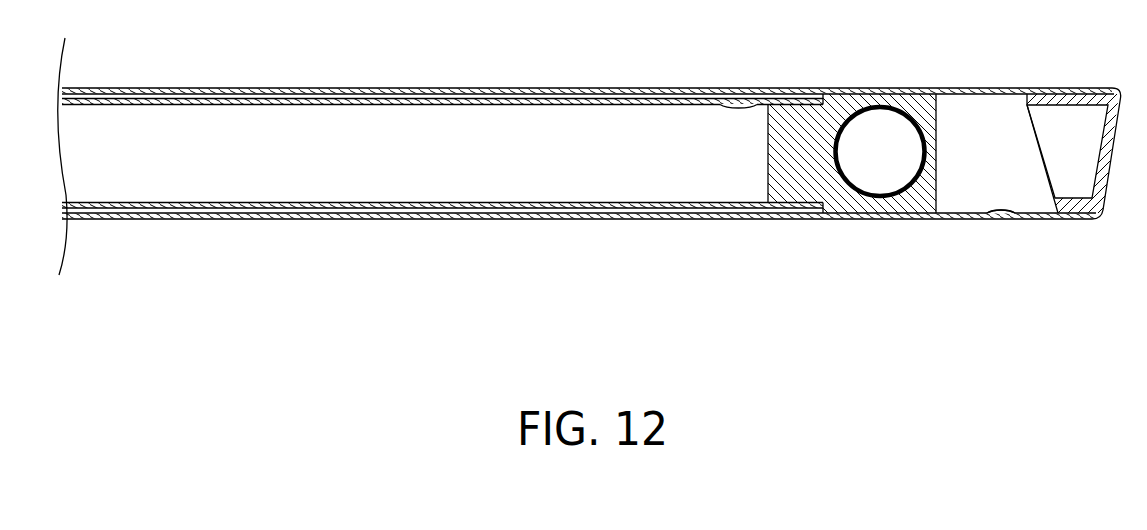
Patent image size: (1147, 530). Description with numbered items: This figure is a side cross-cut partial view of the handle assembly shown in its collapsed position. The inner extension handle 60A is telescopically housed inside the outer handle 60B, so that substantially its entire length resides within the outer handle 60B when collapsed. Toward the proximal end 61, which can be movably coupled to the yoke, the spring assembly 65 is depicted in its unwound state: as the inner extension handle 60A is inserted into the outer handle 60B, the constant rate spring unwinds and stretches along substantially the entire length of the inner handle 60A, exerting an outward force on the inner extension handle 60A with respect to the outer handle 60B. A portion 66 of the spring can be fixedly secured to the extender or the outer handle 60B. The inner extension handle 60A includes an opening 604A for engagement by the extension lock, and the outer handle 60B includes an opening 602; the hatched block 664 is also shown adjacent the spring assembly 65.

The inner extension handle 60A is at (533, 183).
The outer handle 60B is at (489, 219).
The portion of the spring 66 is at (675, 203).
The opening in the inner extension handle 604A is at (735, 100).
The sealing block 664 is at (923, 107).
The spring assembly 65 is at (876, 200).
The proximal end 61 is at (1107, 100).
The opening 602 is at (1008, 215).